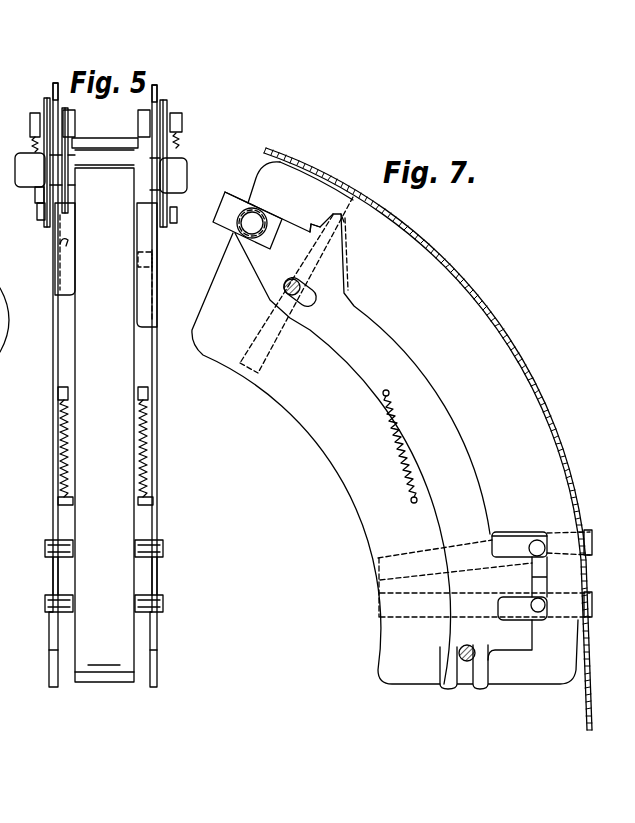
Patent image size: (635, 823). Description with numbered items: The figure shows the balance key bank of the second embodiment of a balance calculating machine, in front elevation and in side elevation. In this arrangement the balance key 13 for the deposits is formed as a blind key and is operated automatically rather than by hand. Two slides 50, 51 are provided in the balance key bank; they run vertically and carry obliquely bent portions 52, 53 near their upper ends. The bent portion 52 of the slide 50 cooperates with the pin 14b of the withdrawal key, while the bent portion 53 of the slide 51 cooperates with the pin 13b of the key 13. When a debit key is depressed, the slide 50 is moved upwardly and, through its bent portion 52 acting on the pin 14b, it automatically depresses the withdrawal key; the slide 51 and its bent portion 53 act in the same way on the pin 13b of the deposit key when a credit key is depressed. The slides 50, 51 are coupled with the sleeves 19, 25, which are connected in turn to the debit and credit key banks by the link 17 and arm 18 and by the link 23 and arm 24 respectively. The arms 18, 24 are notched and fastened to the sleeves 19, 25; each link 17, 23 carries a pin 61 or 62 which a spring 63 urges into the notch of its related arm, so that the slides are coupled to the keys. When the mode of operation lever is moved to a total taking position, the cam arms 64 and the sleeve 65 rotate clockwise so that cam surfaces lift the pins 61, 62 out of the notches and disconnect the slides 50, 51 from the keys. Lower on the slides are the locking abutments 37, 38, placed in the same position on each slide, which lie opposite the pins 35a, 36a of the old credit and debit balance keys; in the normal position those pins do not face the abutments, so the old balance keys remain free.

In FIG. 7, the key for the deposits 13 is at (347, 221).
In FIG. 5, the pin of the key 13 13b is at (61, 241).
In FIG. 7, the pin of the key 13 13b is at (318, 227).
In FIG. 5, the pin of the key 14 14b is at (150, 268).
In FIG. 5, the link 17 is at (171, 209).
In FIG. 5, the arm 18 is at (157, 96).
In FIG. 5, the sleeve 19 is at (31, 134).
In FIG. 5, the link 23 is at (38, 211).
In FIG. 7, the link 23 is at (232, 201).
In FIG. 5, the arm 24 is at (53, 86).
In FIG. 5, the sleeve 25 is at (36, 195).
In FIG. 5, the pin of key 35 35a is at (174, 549).
In FIG. 7, the pin of key 35 35a is at (535, 540).
In FIG. 5, the pin of key 36 36a is at (174, 604).
In FIG. 7, the pin of key 36 36a is at (545, 607).
In FIG. 5, the locking abutment 37 is at (50, 571).
In FIG. 7, the locking abutment 37 is at (548, 578).
In FIG. 5, the locking abutment 38 is at (50, 641).
In FIG. 7, the locking abutment 38 is at (532, 634).
In FIG. 5, the slide 50 is at (161, 373).
In FIG. 5, the slide 51 is at (53, 366).
In FIG. 7, the slide 51 is at (358, 365).
In FIG. 5, the obliquely bent portion 52 is at (148, 308).
In FIG. 5, the obliquely bent portion 53 is at (58, 276).
In FIG. 7, the obliquely bent portion 53 is at (341, 262).
In FIG. 5, the pin 61 is at (138, 122).
In FIG. 5, the pin 62 is at (45, 105).
In FIG. 5, the spring 63 is at (182, 136).
In FIG. 5, the cam arms 64 is at (114, 176).
In FIG. 5, the sleeve 65 is at (80, 139).